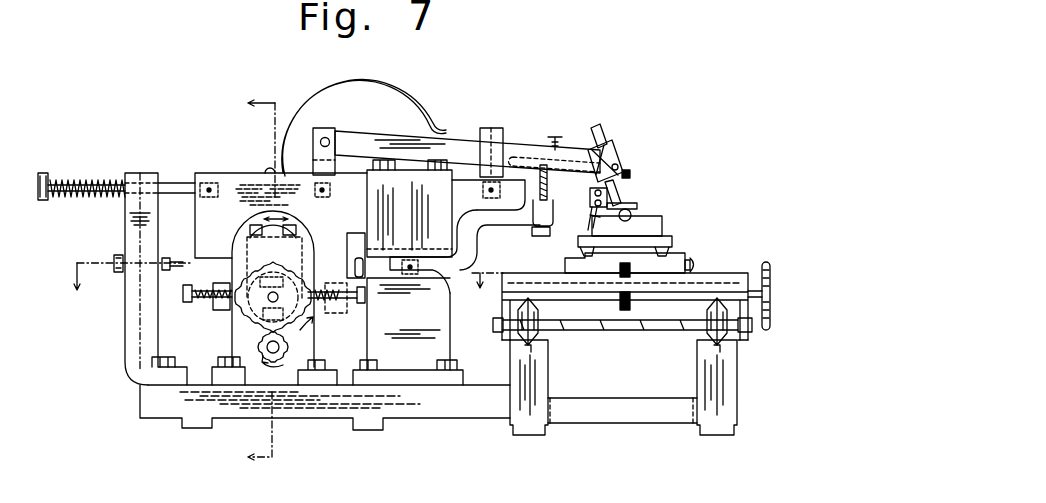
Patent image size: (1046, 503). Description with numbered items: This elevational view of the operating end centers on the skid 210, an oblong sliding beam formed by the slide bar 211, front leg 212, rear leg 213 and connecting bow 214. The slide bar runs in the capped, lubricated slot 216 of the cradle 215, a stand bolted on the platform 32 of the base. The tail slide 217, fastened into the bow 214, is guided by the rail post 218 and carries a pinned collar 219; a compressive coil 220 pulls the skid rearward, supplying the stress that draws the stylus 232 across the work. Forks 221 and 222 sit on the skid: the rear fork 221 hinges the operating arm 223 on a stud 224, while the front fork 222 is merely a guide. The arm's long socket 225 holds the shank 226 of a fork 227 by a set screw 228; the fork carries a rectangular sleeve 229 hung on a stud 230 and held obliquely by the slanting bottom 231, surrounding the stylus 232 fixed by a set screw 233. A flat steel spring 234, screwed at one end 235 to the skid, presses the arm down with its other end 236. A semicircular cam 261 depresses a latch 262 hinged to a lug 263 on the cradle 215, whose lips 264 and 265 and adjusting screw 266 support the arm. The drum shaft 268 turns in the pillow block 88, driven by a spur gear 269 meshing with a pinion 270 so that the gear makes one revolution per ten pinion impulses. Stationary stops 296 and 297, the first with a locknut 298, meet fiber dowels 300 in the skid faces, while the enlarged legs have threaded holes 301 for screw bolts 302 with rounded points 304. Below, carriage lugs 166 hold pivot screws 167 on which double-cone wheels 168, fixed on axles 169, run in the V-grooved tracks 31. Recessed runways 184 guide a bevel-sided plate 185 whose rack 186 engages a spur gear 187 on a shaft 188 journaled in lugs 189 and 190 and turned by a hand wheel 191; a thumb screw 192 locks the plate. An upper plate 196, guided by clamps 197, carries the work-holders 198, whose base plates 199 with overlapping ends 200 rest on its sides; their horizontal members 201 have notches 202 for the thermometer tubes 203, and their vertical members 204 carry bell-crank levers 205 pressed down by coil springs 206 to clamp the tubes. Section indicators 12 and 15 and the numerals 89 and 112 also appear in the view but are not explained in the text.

The section line 12 is at (259, 285).
The section line 15 is at (283, 270).
The tracks 31 is at (534, 348).
The platform 32 is at (420, 417).
The pillow block 88 is at (293, 350).
The gear leader 89 is at (283, 358).
The slide frame 112 is at (715, 273).
The lugs 166 is at (504, 338).
The pivot screws 167 is at (493, 321).
The wheels 168 is at (536, 310).
The axles 169 is at (599, 331).
The recessed runways 184 is at (565, 262).
The bevel-sided plate 185 is at (628, 253).
The rack 186 is at (670, 240).
The spur gear 187 is at (620, 300).
The shaft 188 is at (660, 297).
The lug 189 is at (632, 297).
The lug 190 is at (747, 308).
The hand wheel 191 is at (771, 294).
The thumb screw 192 is at (694, 264).
The plate 196 is at (630, 230).
The clamps 197 is at (583, 250).
The work-holders 198 is at (597, 212).
The base plates 199 is at (675, 246).
The overlapping ends 200 is at (690, 250).
The lower horizontal members 201 is at (663, 225).
The triangular notch 202 is at (607, 205).
The thermometer tubes 203 is at (605, 255).
The vertical members 204 is at (590, 186).
The bell-crank lever 205 is at (629, 209).
The compression coil springs 206 is at (595, 193).
The skid 210 is at (233, 180).
The slide bar 211 is at (463, 195).
The front leg 212 is at (338, 313).
The rear leg 213 is at (221, 310).
The bow 214 is at (262, 203).
The cradle 215 is at (433, 338).
The slot 216 is at (412, 200).
The tail slide 217 is at (88, 195).
The rail post 218 is at (145, 180).
The collar 219 is at (44, 200).
The compressive coil 220 is at (70, 180).
The fork 221 is at (318, 135).
The fork 222 is at (488, 130).
The operating arm 223 is at (372, 138).
The stud 224 is at (321, 140).
The socket 225 is at (530, 157).
The shank 226 is at (568, 157).
The fork 227 is at (620, 168).
The set screw 228 is at (557, 135).
The rectangular sleeve 229 is at (606, 140).
The stud 230 is at (630, 172).
The slanting bottom 231 is at (622, 185).
The stylus 232 is at (599, 130).
The set screw 233 is at (643, 190).
The flat steel spring 234 is at (352, 83).
The end 235 is at (270, 168).
The end 236 is at (438, 128).
The cam 261 is at (252, 224).
The latch 262 is at (497, 225).
The lug 263 is at (412, 268).
The lip 264 is at (263, 270).
The lip 265 is at (540, 184).
The adjusting screw 266 is at (537, 232).
The drum shaft 268 is at (263, 307).
The spur gear 269 is at (238, 270).
The pinion 270 is at (258, 350).
The stationary stop 296 is at (117, 277).
The stationary stop 297 is at (352, 260).
The locknut 298 is at (195, 248).
The fiber dowels 300 is at (352, 260).
The threaded holes 301 is at (217, 300).
The screw bolts 302 is at (196, 296).
The rounded points 304 is at (225, 290).